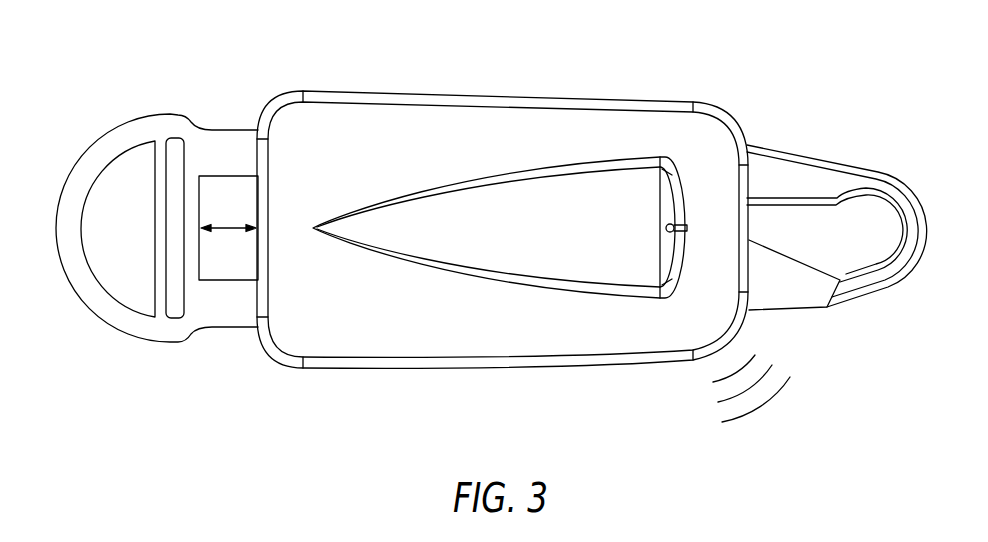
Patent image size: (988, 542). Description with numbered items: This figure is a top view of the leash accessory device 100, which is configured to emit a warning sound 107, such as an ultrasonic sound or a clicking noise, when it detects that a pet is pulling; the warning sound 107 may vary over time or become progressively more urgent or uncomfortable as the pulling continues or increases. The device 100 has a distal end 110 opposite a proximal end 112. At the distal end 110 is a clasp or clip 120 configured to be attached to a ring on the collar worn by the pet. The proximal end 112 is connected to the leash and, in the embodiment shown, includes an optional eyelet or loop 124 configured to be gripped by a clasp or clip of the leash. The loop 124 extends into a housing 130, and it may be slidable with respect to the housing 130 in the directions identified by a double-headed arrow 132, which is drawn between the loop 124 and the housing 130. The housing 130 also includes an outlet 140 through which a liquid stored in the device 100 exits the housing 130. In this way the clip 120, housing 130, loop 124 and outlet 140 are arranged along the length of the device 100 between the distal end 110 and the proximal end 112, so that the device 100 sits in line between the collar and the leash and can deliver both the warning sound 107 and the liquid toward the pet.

The device 100 is at (366, 90).
The warning sound 107 is at (802, 395).
The distal end 110 is at (910, 286).
The proximal end 112 is at (128, 117).
The clip 120 is at (907, 184).
The loop 124 is at (82, 177).
The housing 130 is at (512, 101).
The double-headed arrow 132 is at (231, 226).
The outlet 140 is at (674, 224).